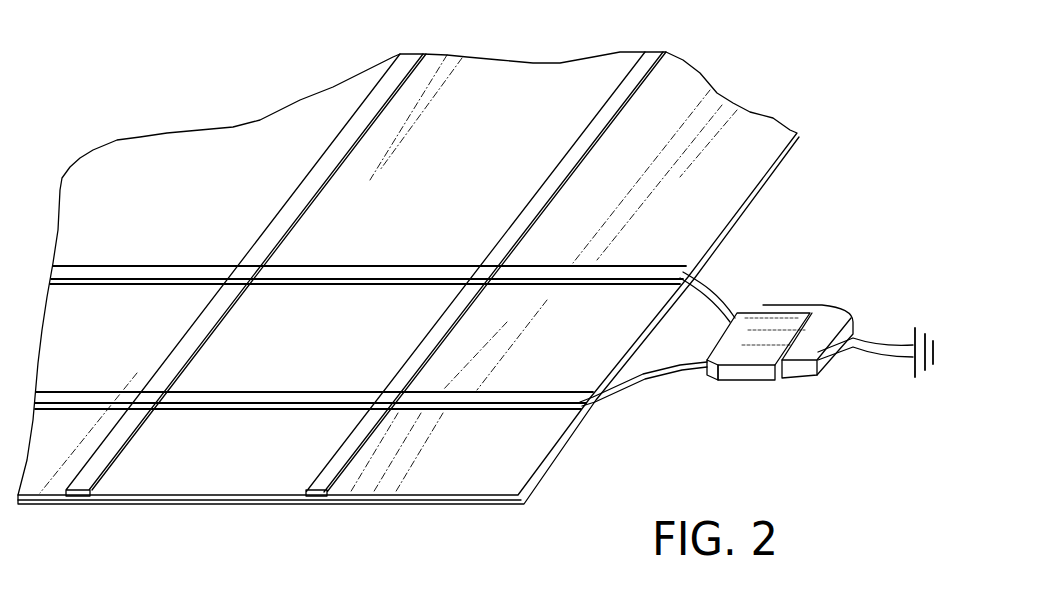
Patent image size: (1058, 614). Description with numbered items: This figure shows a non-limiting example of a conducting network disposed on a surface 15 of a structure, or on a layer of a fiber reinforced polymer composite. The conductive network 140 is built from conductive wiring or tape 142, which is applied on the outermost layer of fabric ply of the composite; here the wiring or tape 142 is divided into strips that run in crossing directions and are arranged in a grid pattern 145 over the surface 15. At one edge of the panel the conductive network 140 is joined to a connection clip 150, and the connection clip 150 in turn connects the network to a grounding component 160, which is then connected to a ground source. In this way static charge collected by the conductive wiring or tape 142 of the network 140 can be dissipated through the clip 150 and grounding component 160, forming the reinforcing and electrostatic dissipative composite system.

The surface of structure 15 is at (446, 197).
The conductive network 140 is at (475, 318).
The conductive wiring or tape 142 is at (268, 398).
The grid pattern 145 is at (392, 414).
The connection clip 150 is at (785, 313).
The grounding component 160 is at (877, 350).